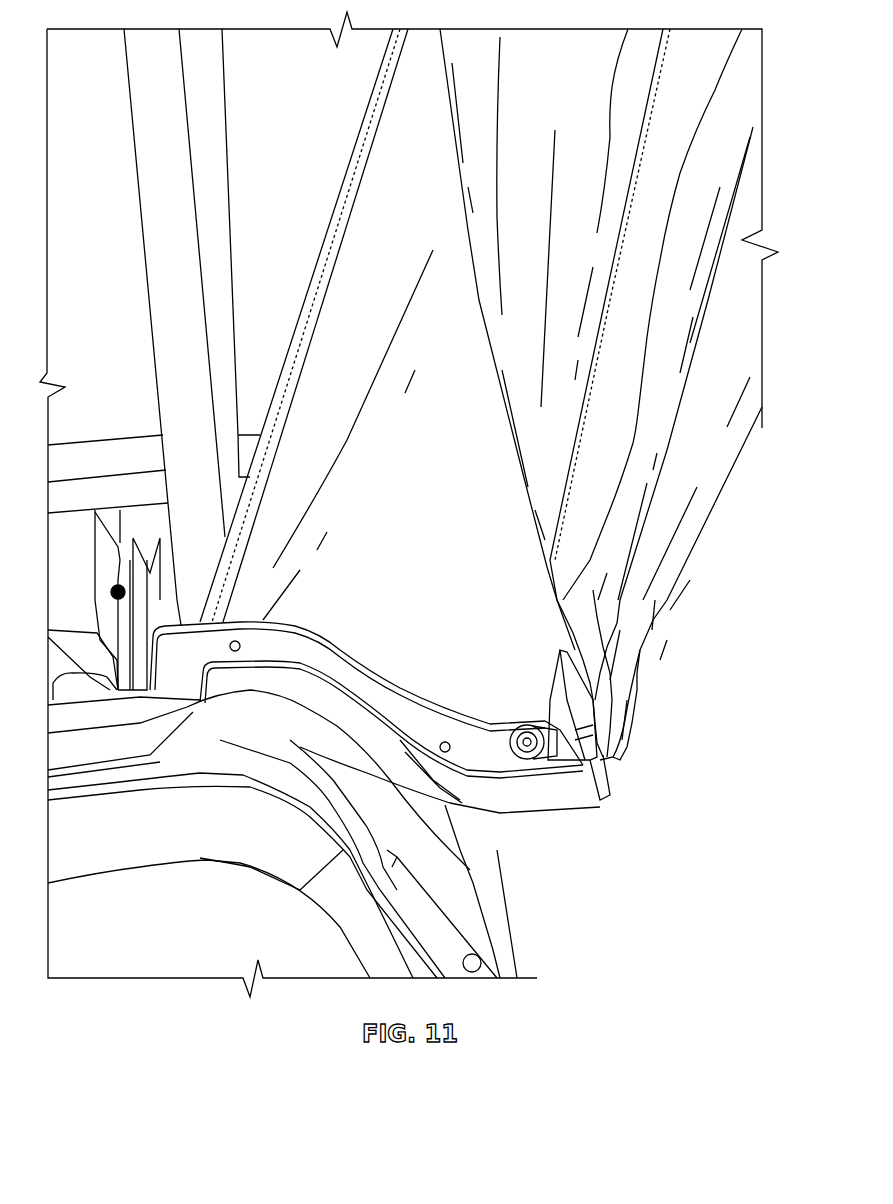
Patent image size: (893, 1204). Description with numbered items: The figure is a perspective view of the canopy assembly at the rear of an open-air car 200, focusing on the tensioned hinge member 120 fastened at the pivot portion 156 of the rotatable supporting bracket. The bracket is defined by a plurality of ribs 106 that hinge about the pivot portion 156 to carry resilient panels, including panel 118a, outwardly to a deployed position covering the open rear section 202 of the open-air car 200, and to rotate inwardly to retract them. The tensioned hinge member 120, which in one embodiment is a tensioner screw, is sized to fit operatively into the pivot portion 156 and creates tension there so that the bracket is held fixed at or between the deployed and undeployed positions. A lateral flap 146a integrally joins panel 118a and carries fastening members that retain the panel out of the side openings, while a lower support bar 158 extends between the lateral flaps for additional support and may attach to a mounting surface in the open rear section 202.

The open-air car 200 is at (132, 233).
The resilient panel 118a is at (583, 124).
The lateral flap 146a is at (637, 737).
The rib 106 is at (612, 790).
The tensioned hinge member 120 is at (530, 723).
The pivot portion 156 is at (590, 800).
The lower support bar 158 is at (488, 817).
The open rear section 202 is at (184, 938).